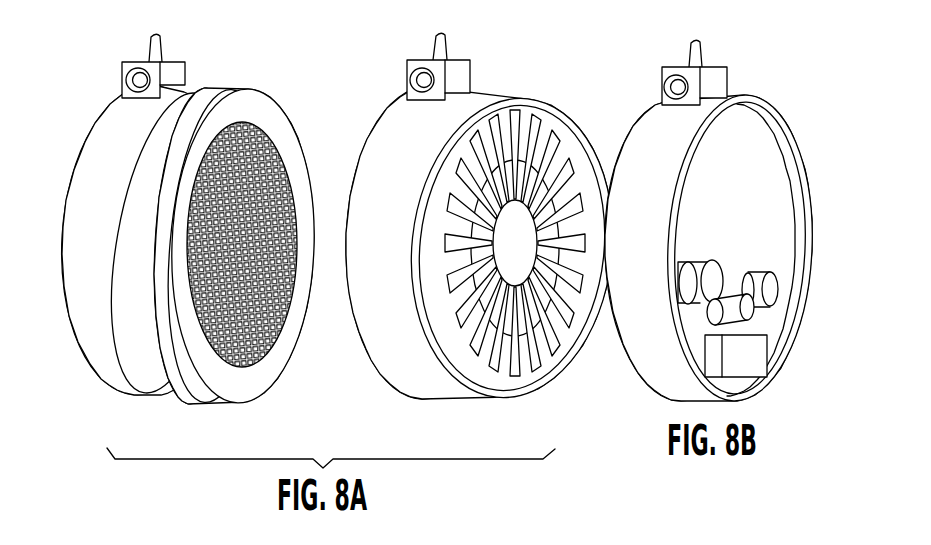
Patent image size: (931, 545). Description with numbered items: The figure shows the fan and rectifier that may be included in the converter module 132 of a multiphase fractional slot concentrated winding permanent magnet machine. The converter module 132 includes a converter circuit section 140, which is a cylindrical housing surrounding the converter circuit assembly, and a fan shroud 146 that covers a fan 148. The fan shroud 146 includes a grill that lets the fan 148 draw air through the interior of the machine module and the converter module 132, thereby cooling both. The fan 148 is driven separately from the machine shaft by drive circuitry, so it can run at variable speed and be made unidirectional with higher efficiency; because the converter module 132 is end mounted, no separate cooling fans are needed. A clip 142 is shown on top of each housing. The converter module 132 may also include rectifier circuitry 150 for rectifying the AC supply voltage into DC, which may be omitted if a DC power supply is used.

In FIG. 8A, the converter module 132 is at (260, 412).
In FIG. 8A, the converter circuit section 140 is at (95, 347).
In FIG. 8B, the converter circuit section 140 is at (650, 353).
In FIG. 8A, the mounting clip 142 is at (137, 60).
In FIG. 8B, the mounting clip 142 is at (716, 68).
In FIG. 8A, the fan shroud 146 is at (248, 97).
In FIG. 8A, the fan 148 is at (530, 117).
In FIG. 8B, the rectifier circuitry 150 is at (712, 282).